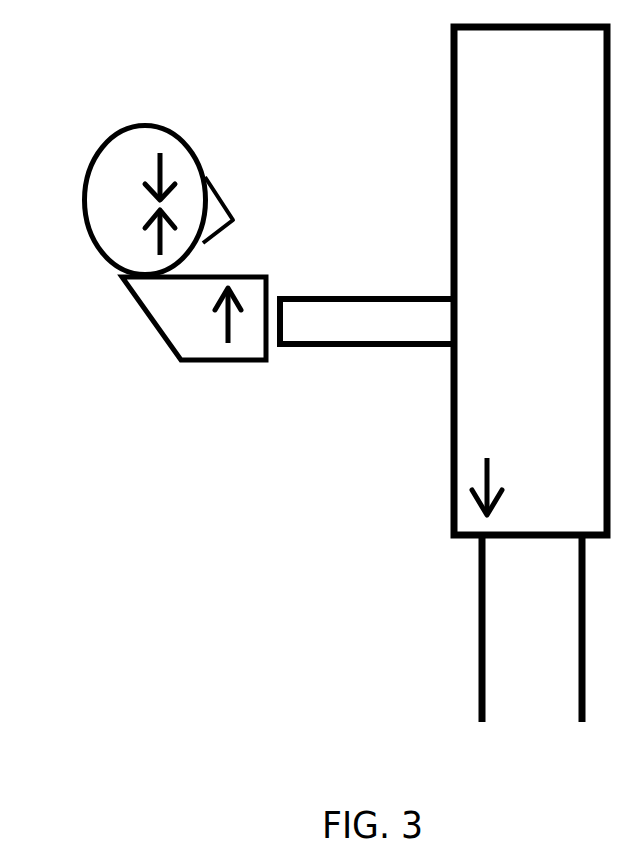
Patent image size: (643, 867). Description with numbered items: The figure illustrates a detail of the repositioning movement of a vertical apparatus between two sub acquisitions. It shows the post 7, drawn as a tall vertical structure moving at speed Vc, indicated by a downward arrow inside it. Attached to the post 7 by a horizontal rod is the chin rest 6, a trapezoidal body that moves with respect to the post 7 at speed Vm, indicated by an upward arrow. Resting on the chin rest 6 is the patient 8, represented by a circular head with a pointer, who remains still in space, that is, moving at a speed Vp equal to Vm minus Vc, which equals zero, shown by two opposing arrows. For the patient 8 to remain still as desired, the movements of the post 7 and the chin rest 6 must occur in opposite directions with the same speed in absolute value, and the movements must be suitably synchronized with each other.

The chin rest 6 is at (212, 350).
The post 7 is at (480, 408).
The patient 8 is at (130, 245).